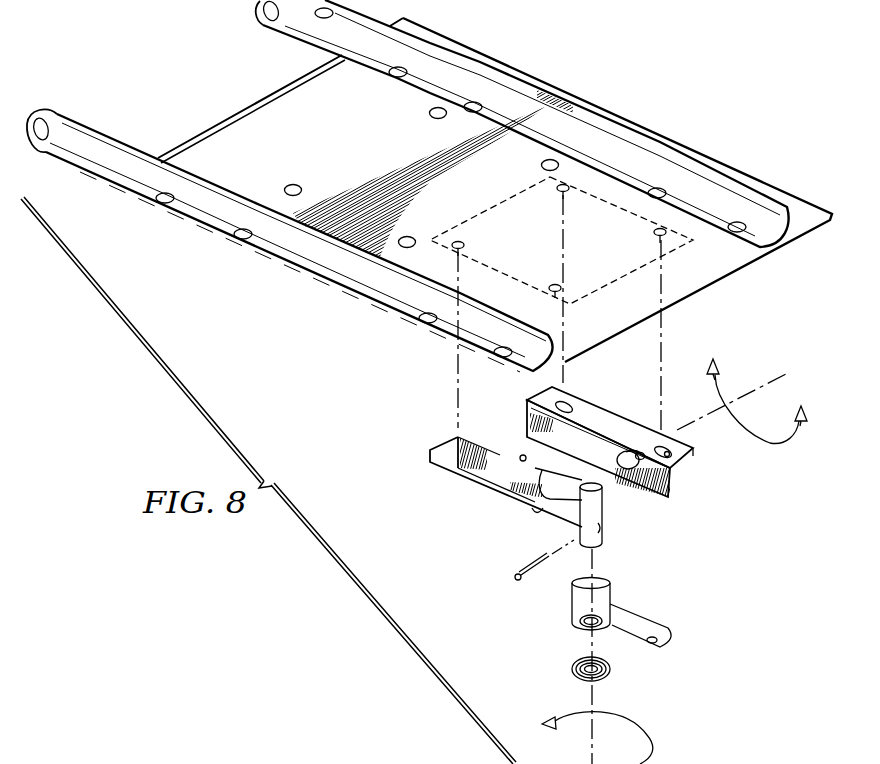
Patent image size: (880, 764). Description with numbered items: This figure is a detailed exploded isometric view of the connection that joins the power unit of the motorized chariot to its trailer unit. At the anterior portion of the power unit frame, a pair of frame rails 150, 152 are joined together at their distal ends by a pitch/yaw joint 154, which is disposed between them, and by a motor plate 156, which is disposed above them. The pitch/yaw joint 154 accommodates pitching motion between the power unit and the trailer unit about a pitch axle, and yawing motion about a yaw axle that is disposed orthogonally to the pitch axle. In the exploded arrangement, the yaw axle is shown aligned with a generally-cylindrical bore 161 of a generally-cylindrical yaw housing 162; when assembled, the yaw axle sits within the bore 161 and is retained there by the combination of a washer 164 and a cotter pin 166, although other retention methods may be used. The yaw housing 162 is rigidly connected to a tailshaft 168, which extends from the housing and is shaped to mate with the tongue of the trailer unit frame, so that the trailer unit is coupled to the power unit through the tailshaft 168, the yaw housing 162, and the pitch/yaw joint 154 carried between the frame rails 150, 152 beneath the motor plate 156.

The frame rail 150 is at (410, 87).
The frame rail 152 is at (360, 293).
The pitch/yaw joint 154 is at (486, 506).
The motor plate 156 is at (703, 273).
The bore 161 is at (587, 624).
The yaw housing 162 is at (573, 609).
The washer 164 is at (575, 672).
The cotter pin 166 is at (510, 577).
The tailshaft 168 is at (640, 614).